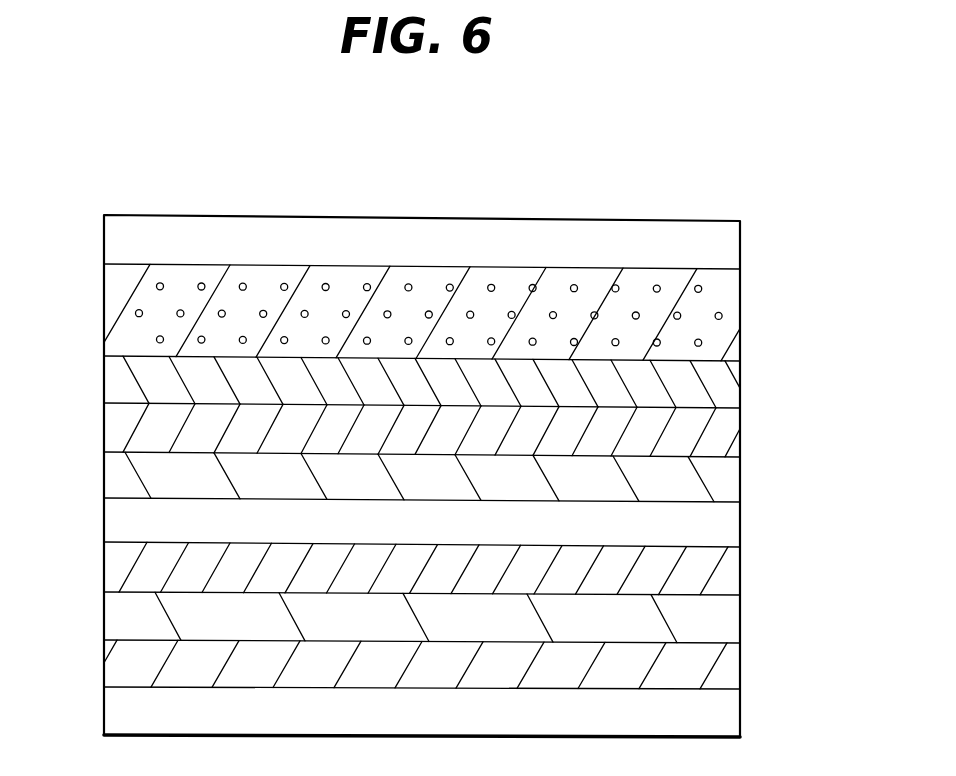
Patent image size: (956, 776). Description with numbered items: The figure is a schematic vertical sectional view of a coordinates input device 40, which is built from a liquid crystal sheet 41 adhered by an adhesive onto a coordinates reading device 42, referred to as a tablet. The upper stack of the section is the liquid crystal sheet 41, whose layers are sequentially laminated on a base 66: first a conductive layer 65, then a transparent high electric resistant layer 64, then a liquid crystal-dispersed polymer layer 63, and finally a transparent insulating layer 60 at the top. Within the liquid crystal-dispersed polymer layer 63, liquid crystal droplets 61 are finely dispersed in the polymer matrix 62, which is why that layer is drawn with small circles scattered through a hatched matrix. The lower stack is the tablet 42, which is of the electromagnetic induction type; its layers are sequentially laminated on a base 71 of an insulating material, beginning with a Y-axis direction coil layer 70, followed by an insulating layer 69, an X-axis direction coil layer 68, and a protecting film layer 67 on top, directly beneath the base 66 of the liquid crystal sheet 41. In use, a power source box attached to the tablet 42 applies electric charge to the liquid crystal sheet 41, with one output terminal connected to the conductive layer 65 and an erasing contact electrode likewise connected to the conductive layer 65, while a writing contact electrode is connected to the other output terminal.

The coordinates input device 40 is at (388, 207).
The liquid crystal sheet 41 is at (89, 219).
The coordinates reading device 42 is at (85, 496).
The transparent insulating layer 60 is at (713, 244).
The liquid crystal droplets 61 is at (703, 290).
The polymer matrix 62 is at (710, 333).
The liquid crystal-dispersed polymer layer 63 is at (840, 265).
The transparent high electric resistant layer 64 is at (727, 392).
The conductive layer 65 is at (723, 438).
The base 66 is at (723, 481).
The protecting film layer 67 is at (722, 527).
The X-axis direction coil layer 68 is at (726, 577).
The insulating layer 69 is at (726, 620).
The Y-axis direction coil layer 70 is at (733, 667).
The base 71 is at (723, 720).